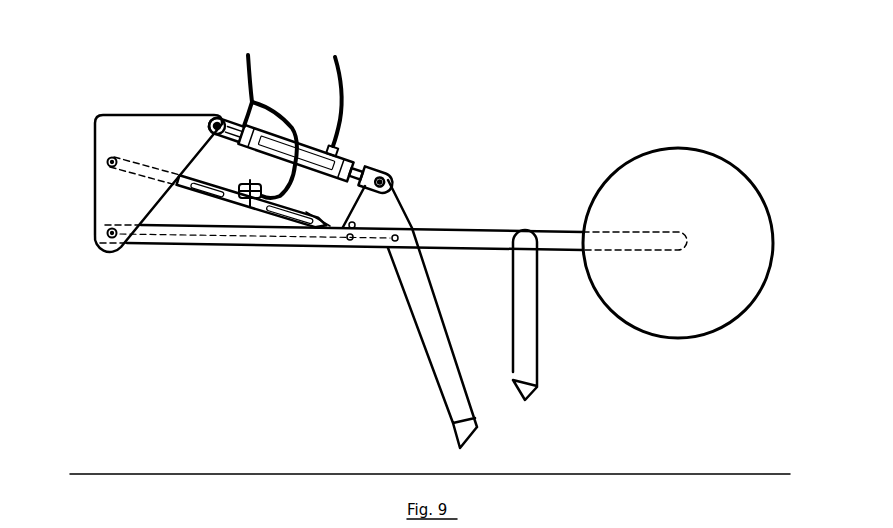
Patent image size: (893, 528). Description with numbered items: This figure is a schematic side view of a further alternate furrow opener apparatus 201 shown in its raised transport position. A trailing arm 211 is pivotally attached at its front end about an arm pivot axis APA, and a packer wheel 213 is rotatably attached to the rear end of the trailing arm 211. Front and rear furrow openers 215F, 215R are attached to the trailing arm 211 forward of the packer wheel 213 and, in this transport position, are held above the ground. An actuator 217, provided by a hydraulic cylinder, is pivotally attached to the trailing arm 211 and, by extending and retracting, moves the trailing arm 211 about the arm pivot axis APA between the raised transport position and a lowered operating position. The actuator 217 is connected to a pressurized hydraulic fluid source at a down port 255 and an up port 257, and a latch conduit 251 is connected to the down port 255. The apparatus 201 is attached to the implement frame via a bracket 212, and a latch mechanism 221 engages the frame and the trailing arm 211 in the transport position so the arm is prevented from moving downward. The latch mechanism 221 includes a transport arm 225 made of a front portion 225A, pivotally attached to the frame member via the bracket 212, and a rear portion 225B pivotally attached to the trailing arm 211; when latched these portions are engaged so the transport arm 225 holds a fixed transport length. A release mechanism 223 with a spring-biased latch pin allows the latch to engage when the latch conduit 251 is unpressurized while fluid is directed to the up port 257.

The furrow opener apparatus 201 is at (410, 66).
The trailing arm 211 is at (168, 245).
The bracket 212 is at (140, 114).
The packer wheel 213 is at (657, 338).
The front furrow opener 215F is at (470, 428).
The rear furrow opener 215R is at (540, 390).
The actuator 217 is at (354, 150).
The latch mechanism 221 is at (243, 212).
The release mechanism 223 is at (195, 182).
The transport arm 225 is at (169, 253).
The front portion of transport arm 225A is at (243, 203).
The rear portion of transport arm 225B is at (323, 220).
The latch conduit 251 is at (262, 100).
The down port 255 is at (250, 52).
The up port 257 is at (340, 60).
The arm pivot axis APA is at (105, 234).